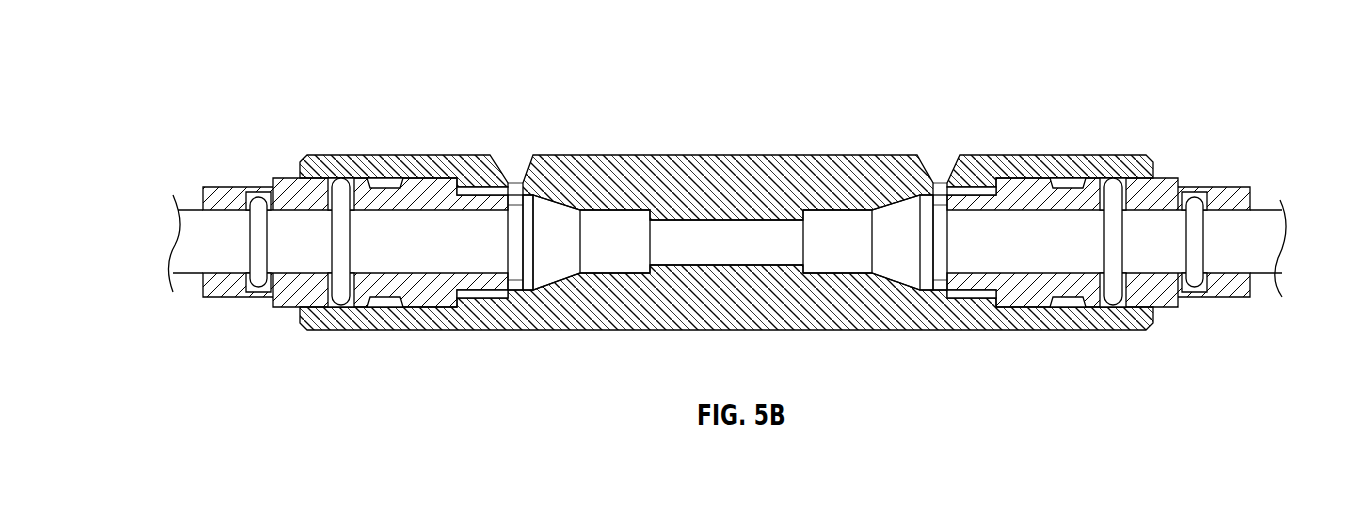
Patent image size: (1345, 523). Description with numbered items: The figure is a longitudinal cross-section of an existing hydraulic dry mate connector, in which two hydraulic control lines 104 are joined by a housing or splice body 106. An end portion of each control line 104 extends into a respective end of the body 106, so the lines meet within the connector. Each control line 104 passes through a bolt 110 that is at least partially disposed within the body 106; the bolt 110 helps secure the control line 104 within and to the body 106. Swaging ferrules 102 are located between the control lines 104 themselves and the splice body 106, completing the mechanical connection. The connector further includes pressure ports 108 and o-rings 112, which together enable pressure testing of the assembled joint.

The swaging ferrule 102 is at (566, 190).
The hydraulic control line 104 is at (210, 242).
The housing or splice body 106 is at (779, 182).
The pressure port 108 is at (517, 146).
The bolt 110 is at (297, 190).
The o-ring 112 is at (340, 250).